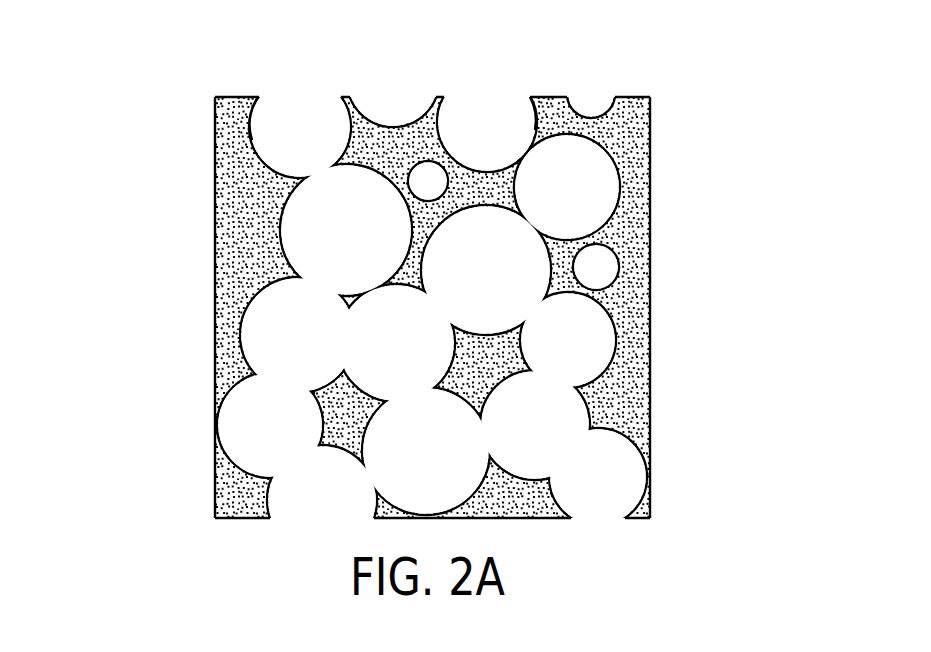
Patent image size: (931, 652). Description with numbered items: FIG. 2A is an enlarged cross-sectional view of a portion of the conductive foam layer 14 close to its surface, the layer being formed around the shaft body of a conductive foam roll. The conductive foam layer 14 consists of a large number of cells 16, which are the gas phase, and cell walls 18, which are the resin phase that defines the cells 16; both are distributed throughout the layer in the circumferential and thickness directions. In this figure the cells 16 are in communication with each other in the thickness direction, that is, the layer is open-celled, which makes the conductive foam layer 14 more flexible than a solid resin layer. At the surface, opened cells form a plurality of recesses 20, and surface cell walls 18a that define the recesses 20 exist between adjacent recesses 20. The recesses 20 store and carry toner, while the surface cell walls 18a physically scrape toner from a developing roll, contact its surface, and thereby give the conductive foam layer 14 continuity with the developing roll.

The conductive foam layer 14 is at (778, 572).
The cells 16 is at (307, 142).
The cell walls 18 is at (250, 237).
The surface cell walls 18a is at (351, 98).
The recesses 20 is at (252, 127).